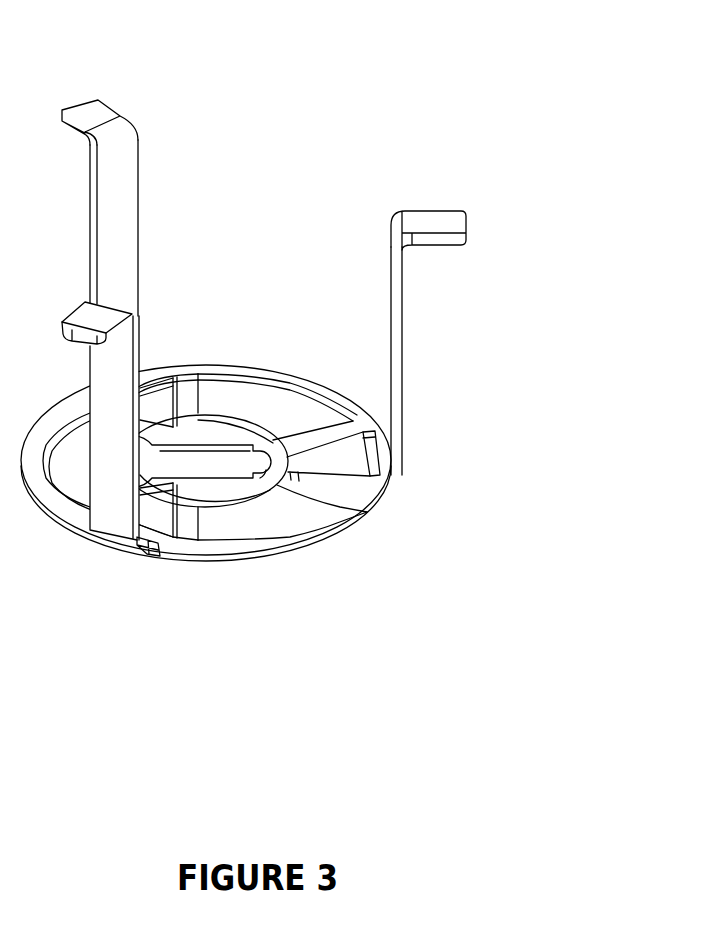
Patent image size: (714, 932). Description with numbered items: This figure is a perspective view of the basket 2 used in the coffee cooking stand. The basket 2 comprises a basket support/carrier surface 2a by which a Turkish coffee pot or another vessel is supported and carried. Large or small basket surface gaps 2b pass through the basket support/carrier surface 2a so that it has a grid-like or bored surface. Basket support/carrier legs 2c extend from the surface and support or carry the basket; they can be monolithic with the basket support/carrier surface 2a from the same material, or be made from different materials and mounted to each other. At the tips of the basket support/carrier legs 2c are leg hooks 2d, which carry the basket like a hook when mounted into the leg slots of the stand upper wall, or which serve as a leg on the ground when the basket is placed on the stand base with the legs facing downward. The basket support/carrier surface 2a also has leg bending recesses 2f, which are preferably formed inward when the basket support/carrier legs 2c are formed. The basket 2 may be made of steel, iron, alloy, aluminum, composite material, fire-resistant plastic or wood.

The basket 2 is at (308, 360).
The basket support/carrier surface 2a is at (283, 550).
The basket surface gaps 2b is at (287, 513).
The basket support/carrier legs 2c is at (115, 231).
The leg hooks 2d is at (94, 112).
The leg bending recesses 2f is at (145, 550).